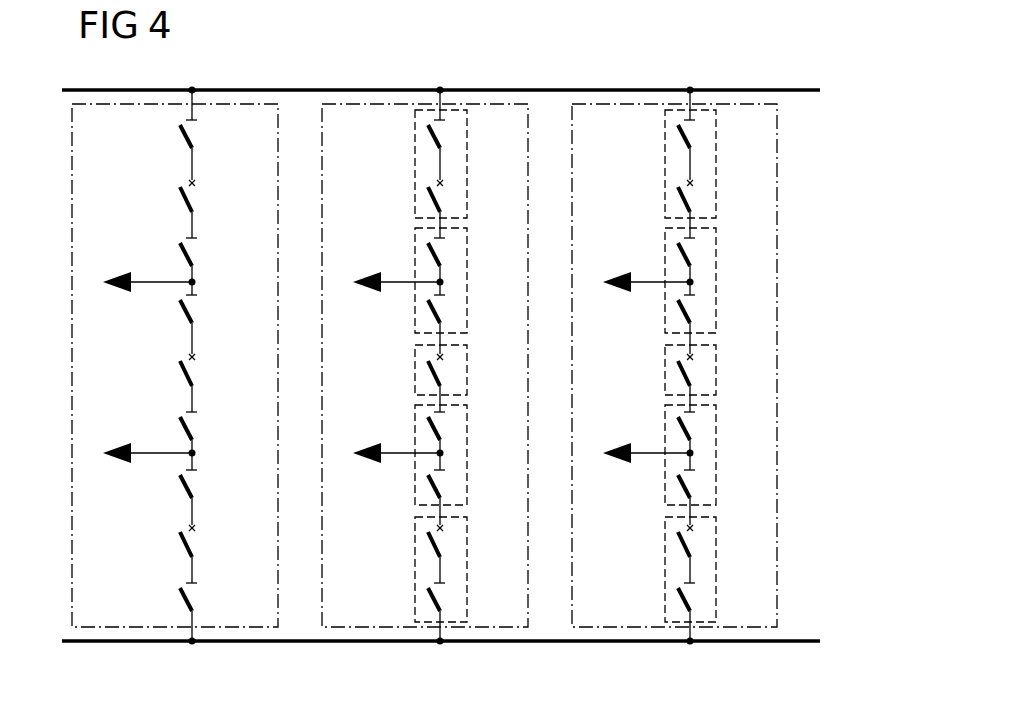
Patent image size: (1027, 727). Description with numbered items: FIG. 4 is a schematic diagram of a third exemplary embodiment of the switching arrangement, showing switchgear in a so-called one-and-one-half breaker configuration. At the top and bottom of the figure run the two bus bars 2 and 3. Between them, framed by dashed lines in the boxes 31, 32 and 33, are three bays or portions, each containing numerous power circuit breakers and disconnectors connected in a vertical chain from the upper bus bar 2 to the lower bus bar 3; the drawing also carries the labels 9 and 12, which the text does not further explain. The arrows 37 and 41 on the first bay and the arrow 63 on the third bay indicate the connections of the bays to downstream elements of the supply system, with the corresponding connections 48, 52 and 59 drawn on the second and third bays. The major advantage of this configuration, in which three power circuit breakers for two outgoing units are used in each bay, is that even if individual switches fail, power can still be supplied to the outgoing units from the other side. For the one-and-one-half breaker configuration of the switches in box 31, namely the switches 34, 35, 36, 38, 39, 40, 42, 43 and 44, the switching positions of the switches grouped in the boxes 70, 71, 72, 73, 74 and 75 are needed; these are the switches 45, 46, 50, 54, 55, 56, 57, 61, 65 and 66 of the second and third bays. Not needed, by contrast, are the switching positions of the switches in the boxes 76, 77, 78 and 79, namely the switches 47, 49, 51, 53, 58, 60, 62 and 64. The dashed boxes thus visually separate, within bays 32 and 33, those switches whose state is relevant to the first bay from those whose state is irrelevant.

The bus bar 2 is at (758, 90).
The bus bar 3 is at (758, 641).
The switchgear assembly 9 is at (282, 492).
The switching element 12 is at (440, 493).
The box 31 is at (72, 158).
The box 32 is at (322, 158).
The box 33 is at (572, 158).
The switch 34 is at (187, 130).
The switch 35 is at (187, 193).
The switch 36 is at (187, 248).
The arrow 37 is at (158, 282).
The switch 38 is at (187, 305).
The switch 39 is at (187, 367).
The switch 40 is at (187, 422).
The arrow 41 is at (158, 453).
The switch 42 is at (187, 480).
The switch 43 is at (187, 538).
The switch 44 is at (187, 593).
The switch 45 is at (435, 130).
The switch 46 is at (435, 193).
The switch 47 is at (435, 248).
The feeder outgoing line 48 is at (389, 282).
The switch 49 is at (435, 305).
The switch 50 is at (435, 367).
The switch 51 is at (435, 422).
The feeder outgoing line 52 is at (389, 453).
The switch 53 is at (435, 480).
The switch 54 is at (435, 538).
The switch 55 is at (435, 593).
The switch 56 is at (685, 130).
The switch 57 is at (685, 193).
The switch 58 is at (685, 248).
The feeder outgoing line 59 is at (638, 282).
The switch 60 is at (685, 305).
The switch 61 is at (685, 367).
The switch 62 is at (685, 422).
The arrow 63 is at (639, 453).
The switch 64 is at (685, 480).
The switch 65 is at (685, 538).
The switch 66 is at (685, 593).
The box 70 is at (415, 168).
The box 71 is at (415, 369).
The box 72 is at (415, 571).
The box 73 is at (665, 168).
The box 74 is at (665, 369).
The box 75 is at (665, 572).
The box 76 is at (415, 315).
The box 77 is at (415, 486).
The box 78 is at (665, 315).
The box 79 is at (665, 487).